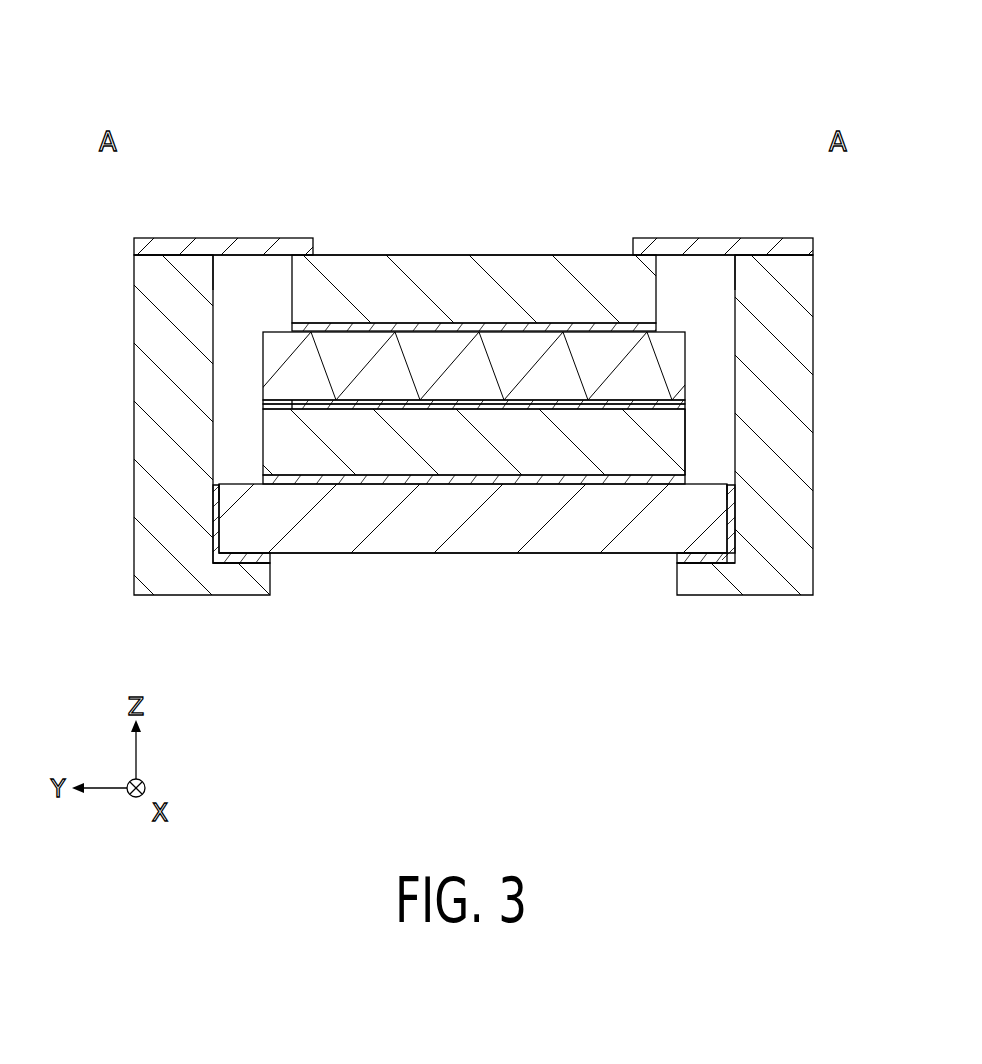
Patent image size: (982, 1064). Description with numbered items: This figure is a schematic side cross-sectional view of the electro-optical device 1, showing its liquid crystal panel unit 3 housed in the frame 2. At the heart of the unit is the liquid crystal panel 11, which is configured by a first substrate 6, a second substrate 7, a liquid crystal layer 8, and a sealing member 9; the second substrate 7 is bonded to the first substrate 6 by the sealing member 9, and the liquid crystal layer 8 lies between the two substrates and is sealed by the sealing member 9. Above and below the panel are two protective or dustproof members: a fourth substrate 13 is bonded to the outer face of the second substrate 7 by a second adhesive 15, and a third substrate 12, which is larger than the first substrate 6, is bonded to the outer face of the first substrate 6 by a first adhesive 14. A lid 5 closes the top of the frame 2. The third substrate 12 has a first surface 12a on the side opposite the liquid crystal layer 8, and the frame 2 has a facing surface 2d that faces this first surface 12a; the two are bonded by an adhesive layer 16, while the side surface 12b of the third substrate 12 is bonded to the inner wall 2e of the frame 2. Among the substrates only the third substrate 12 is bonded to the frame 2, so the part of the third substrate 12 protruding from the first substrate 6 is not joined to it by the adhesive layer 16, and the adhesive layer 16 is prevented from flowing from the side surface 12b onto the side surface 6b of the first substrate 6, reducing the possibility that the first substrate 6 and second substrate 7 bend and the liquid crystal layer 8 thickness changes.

The electro-optical device 1 is at (812, 63).
The liquid crystal panel unit 3 is at (567, 119).
The frame 2 is at (172, 272).
The inner wall 2e is at (213, 277).
The lid 5 is at (290, 247).
The fourth substrate 13 is at (463, 267).
The second adhesive 15 is at (660, 327).
The liquid crystal panel 11 is at (384, 407).
The second substrate 7 is at (272, 347).
The liquid crystal layer 8 is at (327, 400).
The sealing member 9 is at (265, 401).
The first substrate 6 is at (272, 448).
The side surface of first substrate 6b is at (690, 420).
The first adhesive 14 is at (605, 477).
The third substrate 12 is at (463, 540).
The first surface 12a is at (553, 557).
The side surface of third substrate 12b is at (220, 488).
The adhesive layer 16 is at (211, 531).
The facing surface 2d is at (276, 563).